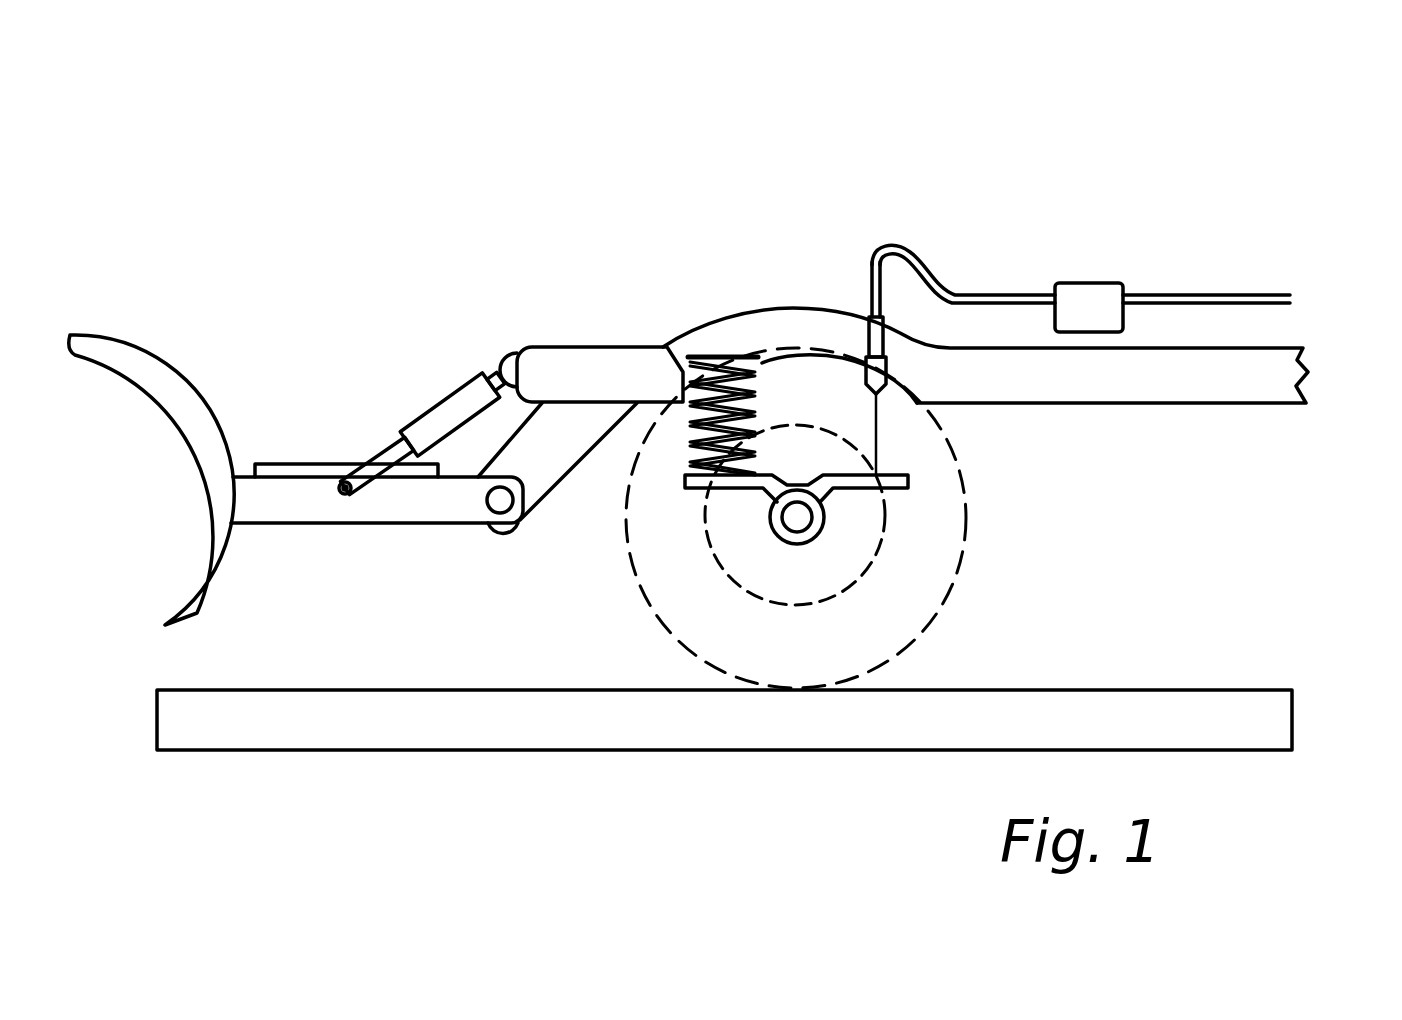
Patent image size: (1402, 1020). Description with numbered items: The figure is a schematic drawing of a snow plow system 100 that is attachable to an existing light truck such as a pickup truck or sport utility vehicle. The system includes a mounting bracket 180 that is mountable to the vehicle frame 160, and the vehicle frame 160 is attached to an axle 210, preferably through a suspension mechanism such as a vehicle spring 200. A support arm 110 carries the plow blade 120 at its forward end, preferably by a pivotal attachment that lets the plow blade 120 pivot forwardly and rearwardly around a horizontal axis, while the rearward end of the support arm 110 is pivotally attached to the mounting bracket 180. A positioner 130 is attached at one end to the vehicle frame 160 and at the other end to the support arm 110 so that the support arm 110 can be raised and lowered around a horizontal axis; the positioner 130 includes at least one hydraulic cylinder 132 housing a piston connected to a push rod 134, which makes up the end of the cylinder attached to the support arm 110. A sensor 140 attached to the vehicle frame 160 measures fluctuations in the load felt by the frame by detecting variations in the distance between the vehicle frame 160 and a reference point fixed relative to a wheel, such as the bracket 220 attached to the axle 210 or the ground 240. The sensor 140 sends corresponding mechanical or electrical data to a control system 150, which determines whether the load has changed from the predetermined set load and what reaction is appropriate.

The snow plow system 100 is at (209, 150).
The support arm 110 is at (362, 523).
The plow blade 120 is at (204, 517).
The positioner 130 is at (397, 426).
The hydraulic cylinder 132 is at (447, 404).
The push rod 134 is at (389, 447).
The sensor 140 is at (868, 318).
The control system 150 is at (1083, 283).
The vehicle frame 160 is at (1300, 348).
The mounting bracket 180 is at (552, 507).
The vehicle spring 200 is at (666, 346).
The axle 210 is at (825, 518).
The bracket 220 is at (900, 475).
The ground 240 is at (1172, 690).